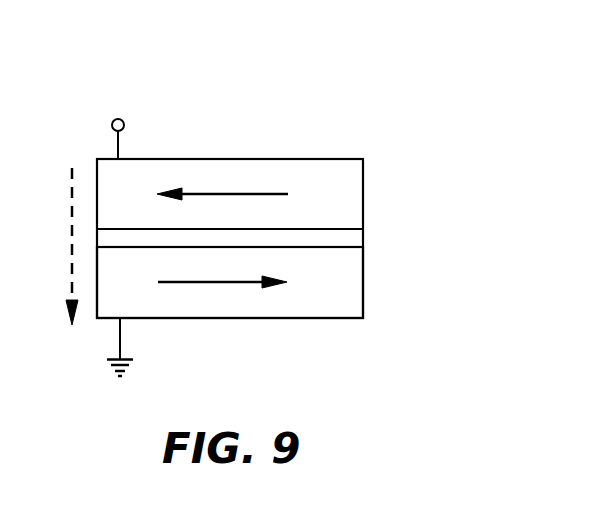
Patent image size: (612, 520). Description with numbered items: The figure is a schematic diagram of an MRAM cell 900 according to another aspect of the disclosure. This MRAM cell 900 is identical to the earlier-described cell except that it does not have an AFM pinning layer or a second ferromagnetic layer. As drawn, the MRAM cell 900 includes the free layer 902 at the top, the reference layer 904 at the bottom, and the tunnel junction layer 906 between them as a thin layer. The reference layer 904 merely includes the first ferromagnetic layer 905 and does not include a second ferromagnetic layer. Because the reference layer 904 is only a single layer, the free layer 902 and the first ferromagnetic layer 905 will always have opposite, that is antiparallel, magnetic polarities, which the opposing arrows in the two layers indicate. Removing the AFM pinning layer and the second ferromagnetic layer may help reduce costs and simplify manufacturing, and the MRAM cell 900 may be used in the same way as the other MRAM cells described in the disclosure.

The MRAM cell 900 is at (400, 99).
The free layer 902 is at (230, 198).
The reference layer 904 is at (373, 248).
The first ferromagnetic layer 905 is at (255, 277).
The tunnel junction layer 906 is at (365, 238).